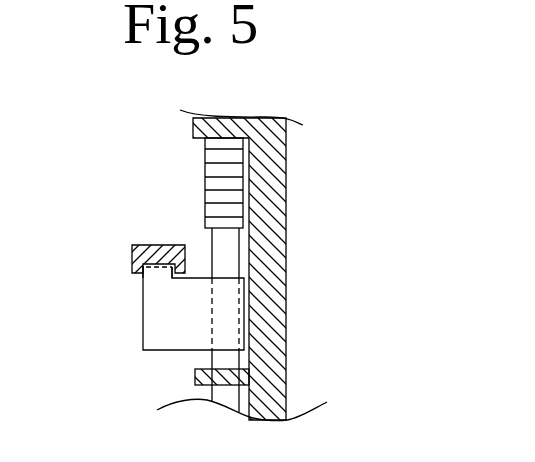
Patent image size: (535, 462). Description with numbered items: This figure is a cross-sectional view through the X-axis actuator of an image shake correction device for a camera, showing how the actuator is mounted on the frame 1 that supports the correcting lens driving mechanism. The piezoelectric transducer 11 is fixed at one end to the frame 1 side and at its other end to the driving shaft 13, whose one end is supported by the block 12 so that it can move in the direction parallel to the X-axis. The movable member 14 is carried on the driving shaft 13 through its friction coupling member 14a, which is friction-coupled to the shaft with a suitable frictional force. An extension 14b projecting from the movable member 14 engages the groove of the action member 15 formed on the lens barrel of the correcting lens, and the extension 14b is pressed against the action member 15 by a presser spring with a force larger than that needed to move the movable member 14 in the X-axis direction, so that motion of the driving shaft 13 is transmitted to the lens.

The frame 1 is at (270, 190).
The piezoelectric transducer 11 is at (212, 167).
The block 12 is at (195, 370).
The driving shaft 13 is at (227, 262).
The movable member 14 is at (157, 317).
The friction coupling member 14a is at (222, 292).
The extension 14b is at (143, 267).
The action member 15 is at (140, 247).